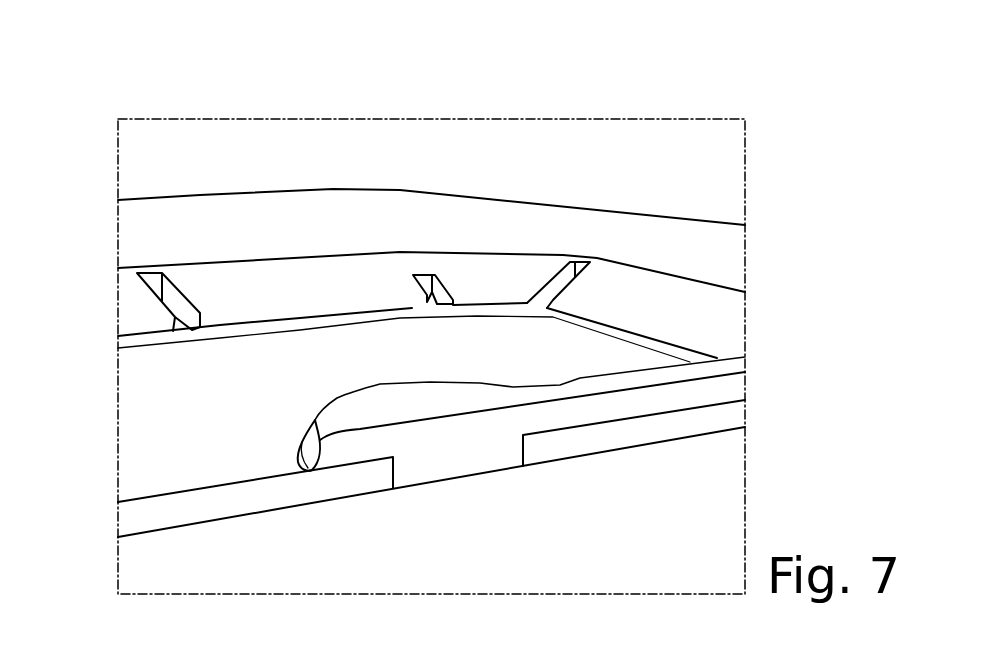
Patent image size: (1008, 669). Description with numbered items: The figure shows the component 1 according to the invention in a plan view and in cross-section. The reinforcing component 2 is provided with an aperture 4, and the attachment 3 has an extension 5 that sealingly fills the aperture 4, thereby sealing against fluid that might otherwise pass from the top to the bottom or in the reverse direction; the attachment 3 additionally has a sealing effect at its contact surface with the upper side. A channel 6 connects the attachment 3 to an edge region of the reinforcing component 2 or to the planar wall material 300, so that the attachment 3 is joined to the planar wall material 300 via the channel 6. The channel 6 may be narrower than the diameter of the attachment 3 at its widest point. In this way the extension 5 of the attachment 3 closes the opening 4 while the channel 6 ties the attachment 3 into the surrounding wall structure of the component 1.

The component 1 is at (107, 110).
The reinforcing component 2 is at (132, 518).
The attachment 3 is at (320, 418).
The aperture 4 is at (633, 403).
The extension 5 is at (480, 483).
The channel 6 is at (560, 387).
The planar wall material 300 is at (717, 318).